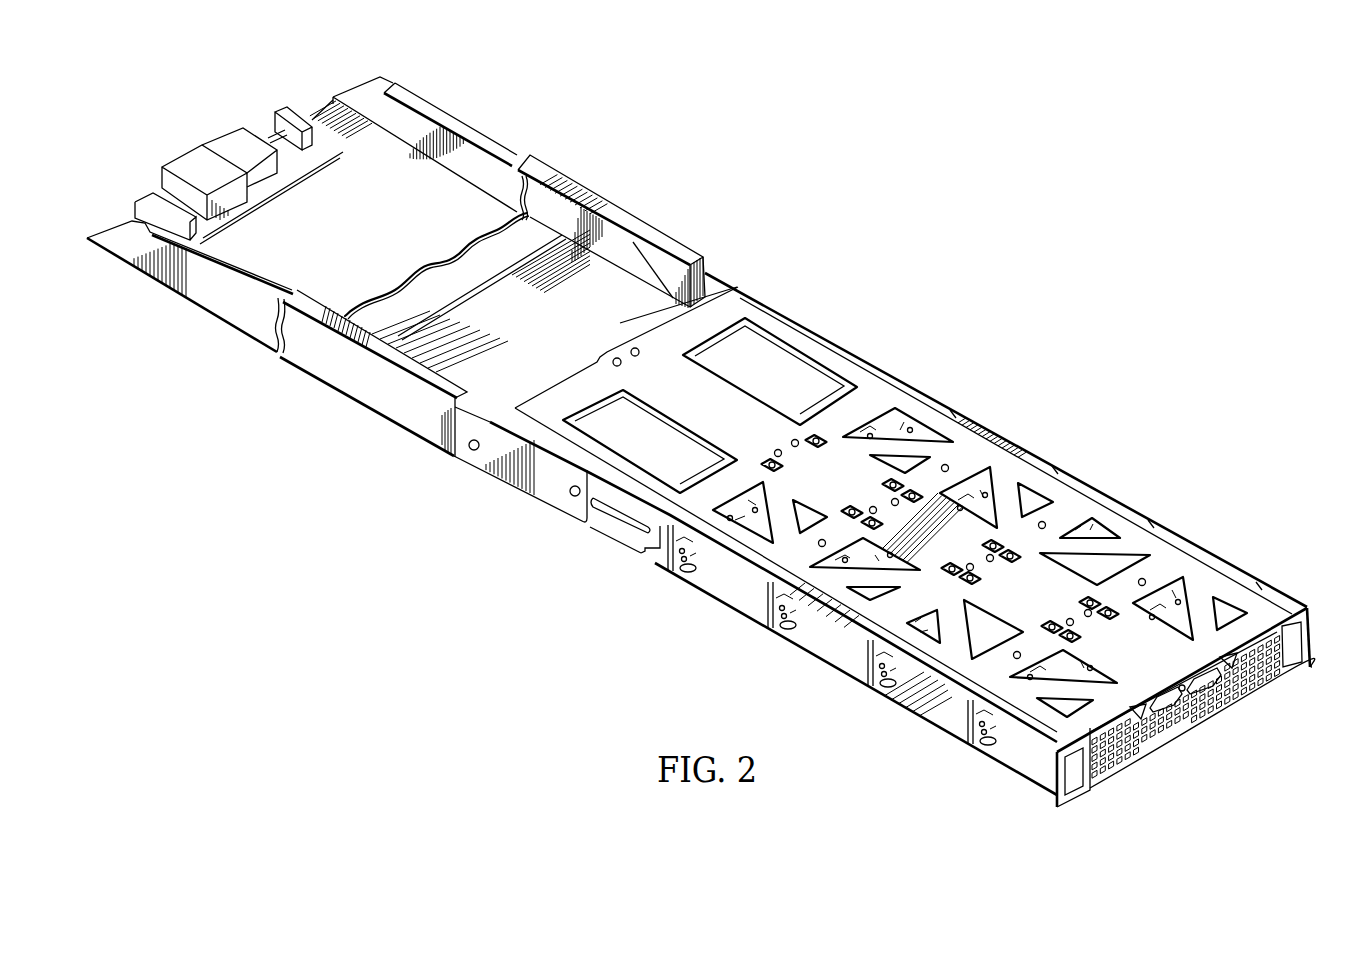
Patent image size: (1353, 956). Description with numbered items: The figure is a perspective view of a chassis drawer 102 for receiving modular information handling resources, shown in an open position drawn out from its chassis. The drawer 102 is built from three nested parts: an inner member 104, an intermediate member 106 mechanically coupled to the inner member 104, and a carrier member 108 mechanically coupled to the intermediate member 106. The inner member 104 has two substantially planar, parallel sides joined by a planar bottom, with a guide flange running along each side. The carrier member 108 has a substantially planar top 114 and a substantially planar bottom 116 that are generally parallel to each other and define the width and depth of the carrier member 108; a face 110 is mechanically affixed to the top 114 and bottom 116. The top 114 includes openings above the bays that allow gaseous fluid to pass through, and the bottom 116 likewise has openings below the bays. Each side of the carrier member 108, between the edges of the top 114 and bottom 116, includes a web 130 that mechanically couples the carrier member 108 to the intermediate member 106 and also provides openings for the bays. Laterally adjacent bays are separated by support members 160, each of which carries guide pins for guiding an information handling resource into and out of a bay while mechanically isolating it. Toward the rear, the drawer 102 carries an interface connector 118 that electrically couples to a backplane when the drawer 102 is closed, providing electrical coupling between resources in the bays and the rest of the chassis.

The chassis drawer 102 is at (895, 137).
The inner member 104 is at (617, 220).
The intermediate member 106 is at (526, 480).
The carrier member 108 is at (637, 541).
The face 110 is at (1178, 726).
The top 114 is at (871, 400).
The bottom 116 is at (1018, 758).
The interface connector 118 is at (317, 112).
The web 130 is at (604, 520).
The support member 160 is at (958, 397).